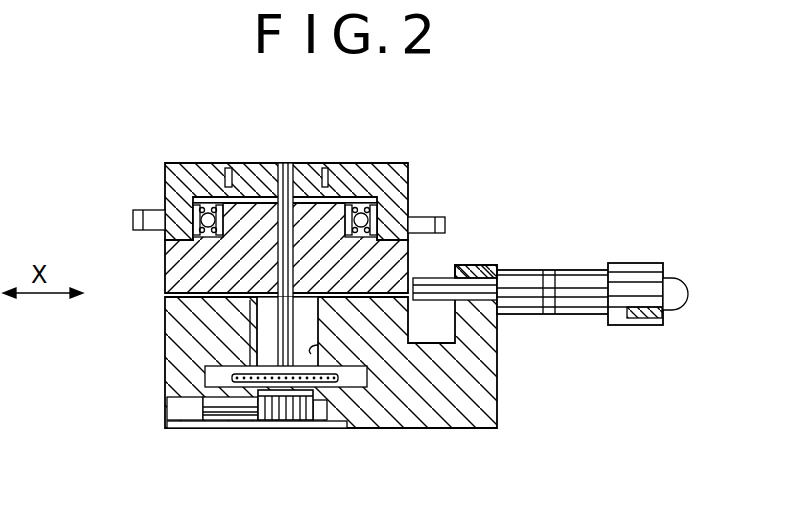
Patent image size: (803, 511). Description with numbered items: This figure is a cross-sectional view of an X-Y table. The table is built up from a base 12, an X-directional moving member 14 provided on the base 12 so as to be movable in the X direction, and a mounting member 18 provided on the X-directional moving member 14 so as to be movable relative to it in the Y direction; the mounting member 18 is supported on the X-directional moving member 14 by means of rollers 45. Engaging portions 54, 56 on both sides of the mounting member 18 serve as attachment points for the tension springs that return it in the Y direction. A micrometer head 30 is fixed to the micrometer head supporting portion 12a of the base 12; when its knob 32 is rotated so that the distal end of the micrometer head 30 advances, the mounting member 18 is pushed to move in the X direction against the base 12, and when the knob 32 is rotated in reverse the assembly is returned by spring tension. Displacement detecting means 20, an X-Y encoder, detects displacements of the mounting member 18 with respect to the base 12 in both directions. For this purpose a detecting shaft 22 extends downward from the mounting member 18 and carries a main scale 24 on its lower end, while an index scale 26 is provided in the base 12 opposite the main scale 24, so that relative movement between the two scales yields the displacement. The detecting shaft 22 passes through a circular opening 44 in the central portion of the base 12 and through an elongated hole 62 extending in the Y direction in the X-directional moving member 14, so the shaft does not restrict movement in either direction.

The base 12 is at (497, 407).
The micrometer head supporting portion 12a is at (480, 263).
The X-directional moving member 14 is at (165, 283).
The mounting member 18 is at (363, 162).
The displacement detecting means 20 is at (276, 436).
The detecting shaft 22 is at (278, 341).
The main scale 24 is at (205, 375).
The index scale 26 is at (307, 422).
The micrometer head 30 is at (550, 328).
The knob 32 is at (633, 263).
The circular opening 44 is at (318, 345).
The rollers 45 is at (193, 215).
The engaging portion 54 is at (133, 215).
The engaging portion 56 is at (445, 224).
The elongated hole 62 is at (282, 250).